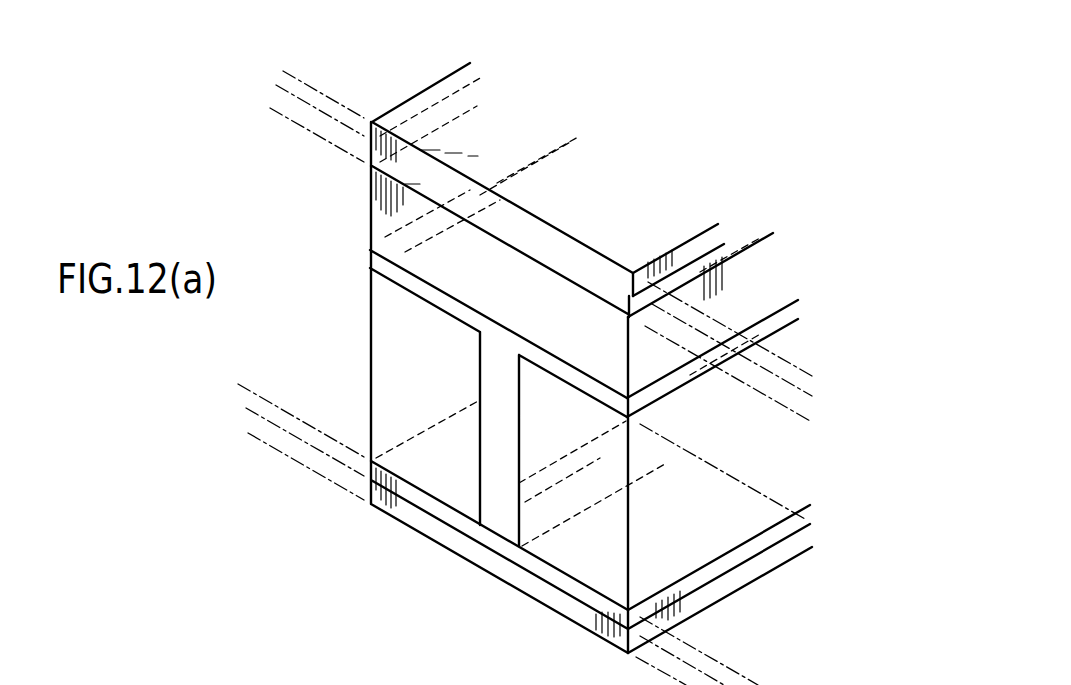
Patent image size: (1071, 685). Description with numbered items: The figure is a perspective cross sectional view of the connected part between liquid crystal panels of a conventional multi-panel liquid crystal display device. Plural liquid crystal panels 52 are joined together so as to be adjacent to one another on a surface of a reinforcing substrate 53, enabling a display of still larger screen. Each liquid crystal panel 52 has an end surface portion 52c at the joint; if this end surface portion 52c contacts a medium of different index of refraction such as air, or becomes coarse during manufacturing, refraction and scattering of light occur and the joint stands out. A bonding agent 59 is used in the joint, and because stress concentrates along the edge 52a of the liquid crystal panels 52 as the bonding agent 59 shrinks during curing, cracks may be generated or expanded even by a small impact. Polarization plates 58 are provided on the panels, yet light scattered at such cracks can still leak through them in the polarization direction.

The liquid crystal panel 52 is at (360, 411).
The edge 52a is at (480, 405).
The end surface portion 52c is at (520, 356).
The reinforcing substrate 53 is at (372, 193).
The polarization plate 58 is at (402, 104).
The bonding agent 59 is at (498, 542).